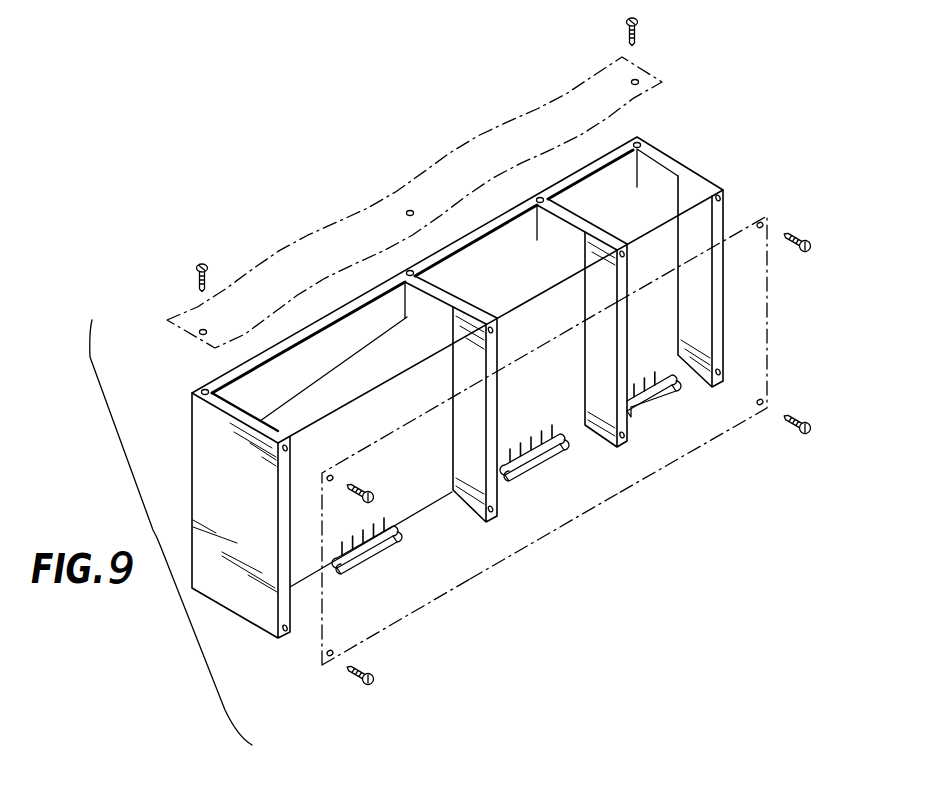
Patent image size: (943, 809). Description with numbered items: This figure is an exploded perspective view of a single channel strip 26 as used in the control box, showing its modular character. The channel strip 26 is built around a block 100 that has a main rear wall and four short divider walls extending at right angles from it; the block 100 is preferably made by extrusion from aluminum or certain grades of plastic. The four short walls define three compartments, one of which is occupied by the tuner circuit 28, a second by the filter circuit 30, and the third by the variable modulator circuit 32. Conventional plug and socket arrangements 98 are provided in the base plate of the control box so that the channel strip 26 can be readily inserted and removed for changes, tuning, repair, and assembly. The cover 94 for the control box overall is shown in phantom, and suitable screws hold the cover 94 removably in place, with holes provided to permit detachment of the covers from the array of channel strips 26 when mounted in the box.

The channel strip 26 is at (199, 482).
The block 100 is at (200, 423).
The cover 94 is at (554, 100).
The tuner circuit 28 is at (410, 497).
The filter circuit 30 is at (555, 413).
The variable modulator circuit 32 is at (663, 308).
The plug and socket arrangements 98 is at (359, 570).